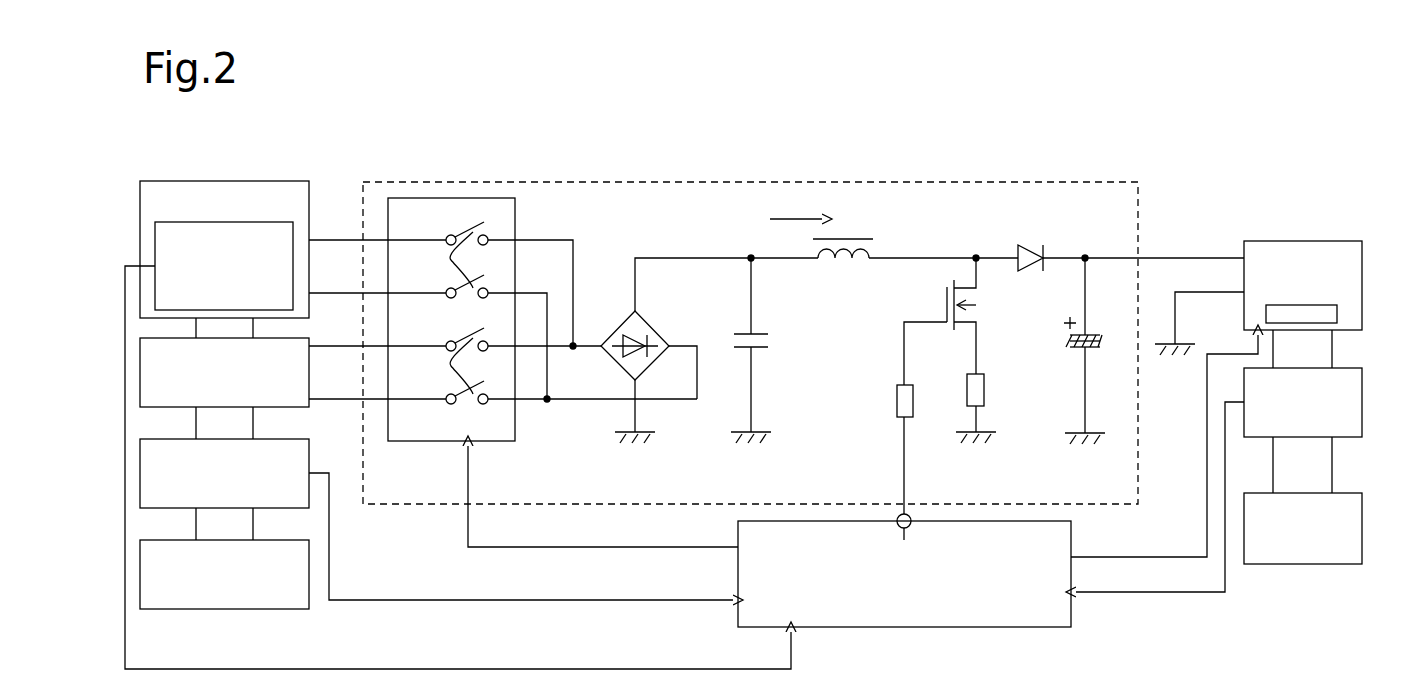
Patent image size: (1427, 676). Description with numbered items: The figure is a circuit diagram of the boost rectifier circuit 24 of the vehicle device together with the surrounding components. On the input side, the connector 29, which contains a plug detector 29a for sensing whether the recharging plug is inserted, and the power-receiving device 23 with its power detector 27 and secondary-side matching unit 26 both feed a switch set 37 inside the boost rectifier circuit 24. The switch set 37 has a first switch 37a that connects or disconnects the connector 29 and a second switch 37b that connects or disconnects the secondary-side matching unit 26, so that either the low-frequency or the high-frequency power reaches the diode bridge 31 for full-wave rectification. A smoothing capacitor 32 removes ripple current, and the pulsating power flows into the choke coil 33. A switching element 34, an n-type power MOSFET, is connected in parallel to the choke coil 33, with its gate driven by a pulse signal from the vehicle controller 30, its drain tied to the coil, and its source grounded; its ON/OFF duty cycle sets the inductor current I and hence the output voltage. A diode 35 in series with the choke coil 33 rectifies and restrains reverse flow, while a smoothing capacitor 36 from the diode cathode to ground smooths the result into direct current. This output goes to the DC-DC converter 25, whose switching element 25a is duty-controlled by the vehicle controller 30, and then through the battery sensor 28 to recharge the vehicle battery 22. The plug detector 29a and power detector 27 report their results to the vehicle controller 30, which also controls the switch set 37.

The vehicle battery 22 is at (1346, 493).
The power-receiving device 23 is at (240, 609).
The boost rectifier circuit 24 is at (933, 182).
The DC-DC converter 25 is at (1346, 241).
The switching element 25a is at (1337, 314).
The secondary-side matching unit 26 is at (309, 384).
The power detector 27 is at (309, 456).
The battery sensor 28 is at (1346, 368).
The connector 29 is at (227, 181).
The plug detector 29a is at (283, 222).
The vehicle controller 30 is at (1017, 627).
The diode bridge 31 is at (656, 316).
The smoothing capacitor 32 is at (766, 329).
The choke coil 33 is at (875, 250).
The switching element 34 is at (946, 298).
The diode 35 is at (1030, 245).
The smoothing capacitor 36 is at (1074, 348).
The switch set 37 is at (482, 198).
The first switch 37a is at (443, 260).
The second switch 37b is at (443, 366).